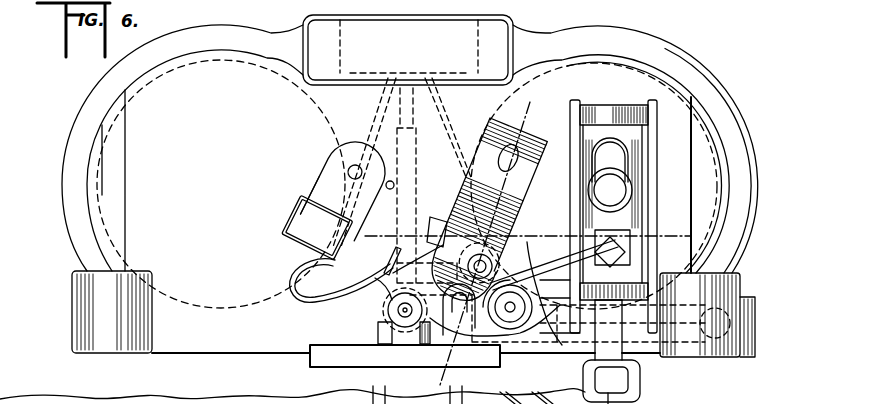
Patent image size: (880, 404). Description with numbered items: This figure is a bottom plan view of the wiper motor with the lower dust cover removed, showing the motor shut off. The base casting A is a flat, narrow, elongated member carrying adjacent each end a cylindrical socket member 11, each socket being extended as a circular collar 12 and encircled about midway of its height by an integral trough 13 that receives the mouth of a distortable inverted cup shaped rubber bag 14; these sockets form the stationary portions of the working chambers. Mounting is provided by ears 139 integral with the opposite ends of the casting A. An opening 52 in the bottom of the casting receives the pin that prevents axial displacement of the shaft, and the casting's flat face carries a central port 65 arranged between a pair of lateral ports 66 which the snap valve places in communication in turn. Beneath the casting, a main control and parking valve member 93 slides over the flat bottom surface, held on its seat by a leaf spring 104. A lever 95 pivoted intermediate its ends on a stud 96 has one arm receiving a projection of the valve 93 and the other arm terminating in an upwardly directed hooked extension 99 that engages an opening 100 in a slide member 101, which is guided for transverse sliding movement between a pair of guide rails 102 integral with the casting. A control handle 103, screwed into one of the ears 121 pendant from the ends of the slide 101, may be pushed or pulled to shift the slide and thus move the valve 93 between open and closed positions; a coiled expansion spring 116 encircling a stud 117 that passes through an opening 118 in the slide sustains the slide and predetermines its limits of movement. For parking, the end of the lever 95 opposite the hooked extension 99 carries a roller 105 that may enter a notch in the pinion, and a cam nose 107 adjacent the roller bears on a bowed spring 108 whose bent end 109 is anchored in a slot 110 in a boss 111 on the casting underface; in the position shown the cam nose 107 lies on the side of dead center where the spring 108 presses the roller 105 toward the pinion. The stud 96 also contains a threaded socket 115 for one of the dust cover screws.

The base casting A is at (75, 106).
The cylindrical socket member 11 is at (217, 310).
The circular collar 12 is at (610, 98).
The integral trough 13 is at (512, 114).
The inverted cup shaped rubber bag 14 is at (382, 246).
The opening 52 is at (395, 185).
The central port 65 is at (412, 80).
The lateral ports 66 is at (390, 77).
The main control and parking valve member 93 is at (405, 356).
The lever 95 is at (568, 264).
The stud 96 is at (522, 330).
The hooked extension 99 is at (605, 247).
The opening 100 is at (632, 258).
The slide member 101 is at (633, 143).
The guide rails 102 is at (576, 100).
The control handle 103 is at (633, 386).
The leaf spring 104 is at (527, 188).
The roller 105 is at (388, 310).
The cam nose 107 is at (388, 262).
The bowed spring 108 is at (307, 302).
The bent end 109 is at (311, 203).
The slot 110 is at (295, 228).
The boss 111 is at (330, 170).
The threaded socket 115 is at (510, 313).
The coiled expansion spring 116 is at (625, 193).
The stud 117 is at (617, 183).
The opening 118 is at (623, 160).
The ears 121 is at (632, 107).
The ears 139 is at (78, 322).